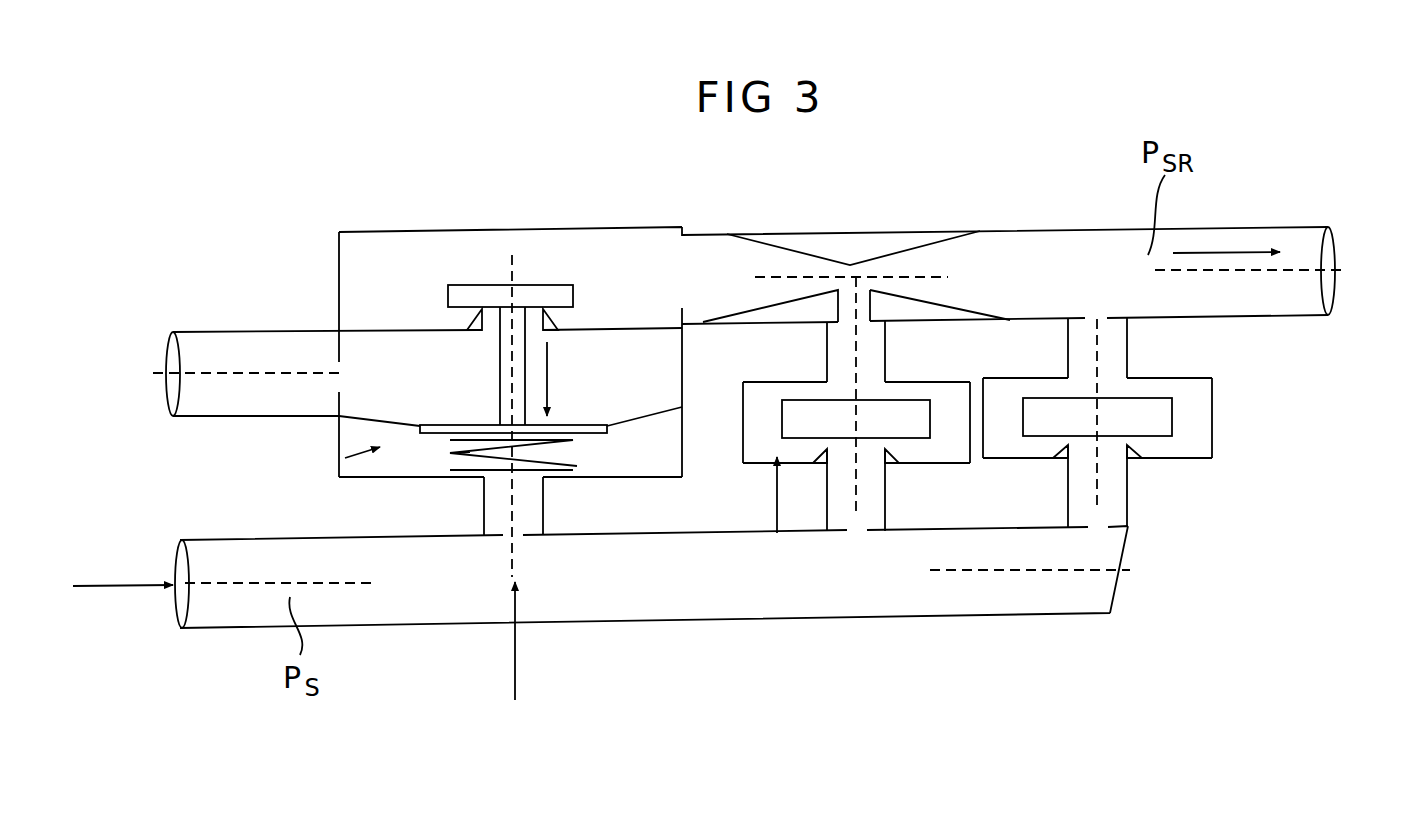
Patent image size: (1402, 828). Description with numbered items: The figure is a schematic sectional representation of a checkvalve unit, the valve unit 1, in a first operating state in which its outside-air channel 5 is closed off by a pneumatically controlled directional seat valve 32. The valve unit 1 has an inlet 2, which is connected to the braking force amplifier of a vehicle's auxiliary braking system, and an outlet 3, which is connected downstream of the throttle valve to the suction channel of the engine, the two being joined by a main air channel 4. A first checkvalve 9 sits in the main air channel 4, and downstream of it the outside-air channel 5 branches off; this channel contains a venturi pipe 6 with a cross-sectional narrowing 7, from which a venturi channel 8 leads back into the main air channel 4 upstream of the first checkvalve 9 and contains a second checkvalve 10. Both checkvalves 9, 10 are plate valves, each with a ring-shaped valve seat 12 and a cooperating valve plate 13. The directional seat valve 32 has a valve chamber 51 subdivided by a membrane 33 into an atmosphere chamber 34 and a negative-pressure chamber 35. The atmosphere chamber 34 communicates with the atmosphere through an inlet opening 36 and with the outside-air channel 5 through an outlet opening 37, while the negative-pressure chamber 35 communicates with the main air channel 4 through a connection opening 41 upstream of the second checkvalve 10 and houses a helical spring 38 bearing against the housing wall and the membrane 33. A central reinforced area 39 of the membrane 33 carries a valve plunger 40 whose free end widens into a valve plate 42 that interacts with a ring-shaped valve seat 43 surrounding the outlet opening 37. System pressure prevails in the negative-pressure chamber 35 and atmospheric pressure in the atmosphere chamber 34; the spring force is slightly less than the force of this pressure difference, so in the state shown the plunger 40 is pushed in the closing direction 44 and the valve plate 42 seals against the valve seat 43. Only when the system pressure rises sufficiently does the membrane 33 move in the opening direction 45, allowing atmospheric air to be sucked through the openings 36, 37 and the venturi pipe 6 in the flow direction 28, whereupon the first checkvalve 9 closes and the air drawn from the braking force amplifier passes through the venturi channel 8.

The valve unit 1 is at (1180, 625).
The inlet 2 is at (170, 607).
The outlet 3 is at (1345, 240).
The main air channel 4 is at (1080, 255).
The outside-air channel 5 is at (710, 260).
The venturi pipe 6 is at (928, 235).
The cross-sectional narrowing 7 is at (852, 275).
The venturi channel 8 is at (838, 350).
The first checkvalve 9 is at (1200, 423).
The second checkvalve 10 is at (777, 533).
The valve seat 12 is at (891, 458).
The valve plate 13 is at (902, 413).
The flow direction 28 is at (105, 585).
The directional seat valve 32 is at (402, 208).
The membrane 33 is at (340, 428).
The atmosphere chamber 34 is at (383, 355).
The negative-pressure chamber 35 is at (420, 460).
The inlet opening 36 is at (340, 362).
The outlet opening 37 is at (491, 308).
The helical spring 38 is at (542, 446).
The central reinforced area 39 is at (582, 428).
The valve plunger 40 is at (500, 366).
The connection opening 41 is at (546, 478).
The valve plate 42 is at (538, 288).
The valve seat 43 is at (560, 318).
The closing direction 44 is at (553, 355).
The opening direction 45 is at (517, 655).
The valve chamber 51 is at (340, 462).